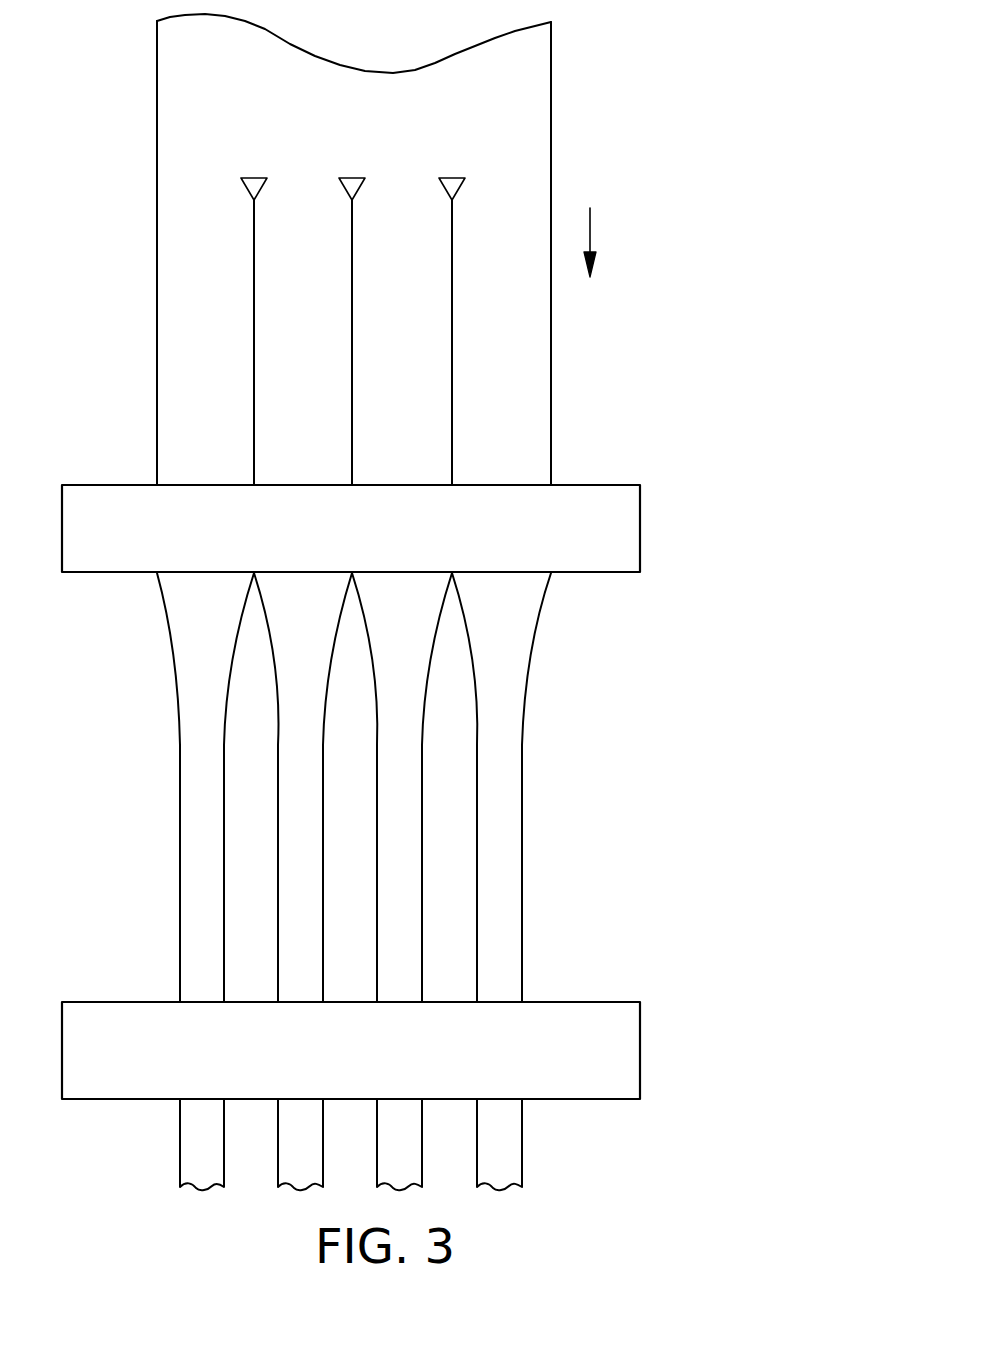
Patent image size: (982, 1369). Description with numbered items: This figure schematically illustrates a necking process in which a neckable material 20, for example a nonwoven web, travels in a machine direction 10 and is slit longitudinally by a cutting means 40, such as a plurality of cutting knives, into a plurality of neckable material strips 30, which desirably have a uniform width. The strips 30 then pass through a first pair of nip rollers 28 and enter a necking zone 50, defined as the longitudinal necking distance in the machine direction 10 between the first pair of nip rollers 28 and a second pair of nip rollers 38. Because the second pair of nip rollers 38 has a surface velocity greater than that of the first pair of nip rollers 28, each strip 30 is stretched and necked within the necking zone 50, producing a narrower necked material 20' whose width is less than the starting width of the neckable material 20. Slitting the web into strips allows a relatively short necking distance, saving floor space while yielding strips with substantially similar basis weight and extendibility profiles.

The machine direction 10 is at (606, 242).
The neckable material 20 is at (392, 249).
The necked material 20' is at (415, 1144).
The first pair of nip rollers 28 is at (631, 469).
The neckable material strips 30 is at (182, 431).
The second pair of nip rollers 38 is at (634, 989).
The cutting means 40 is at (255, 178).
The necking zone 50 is at (154, 866).